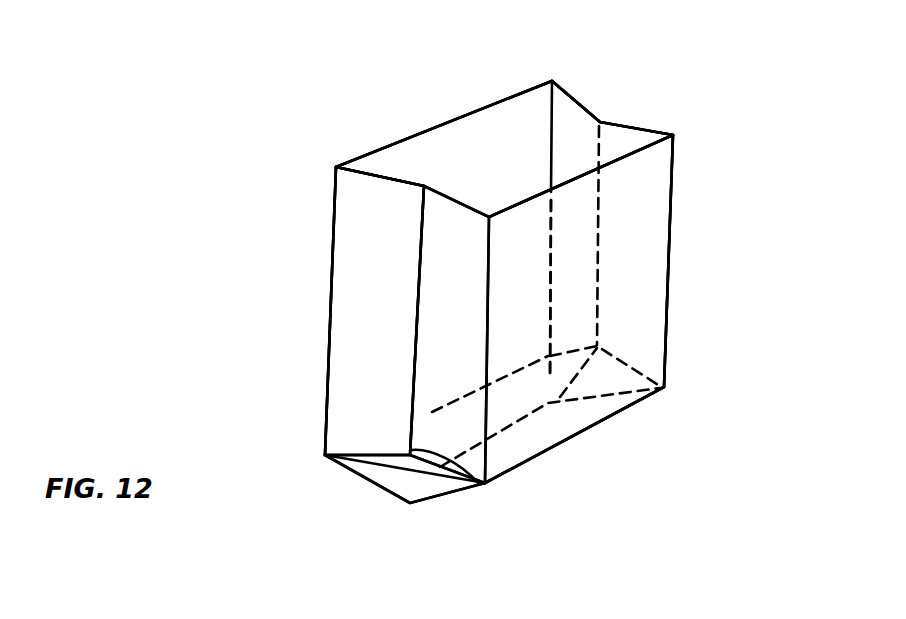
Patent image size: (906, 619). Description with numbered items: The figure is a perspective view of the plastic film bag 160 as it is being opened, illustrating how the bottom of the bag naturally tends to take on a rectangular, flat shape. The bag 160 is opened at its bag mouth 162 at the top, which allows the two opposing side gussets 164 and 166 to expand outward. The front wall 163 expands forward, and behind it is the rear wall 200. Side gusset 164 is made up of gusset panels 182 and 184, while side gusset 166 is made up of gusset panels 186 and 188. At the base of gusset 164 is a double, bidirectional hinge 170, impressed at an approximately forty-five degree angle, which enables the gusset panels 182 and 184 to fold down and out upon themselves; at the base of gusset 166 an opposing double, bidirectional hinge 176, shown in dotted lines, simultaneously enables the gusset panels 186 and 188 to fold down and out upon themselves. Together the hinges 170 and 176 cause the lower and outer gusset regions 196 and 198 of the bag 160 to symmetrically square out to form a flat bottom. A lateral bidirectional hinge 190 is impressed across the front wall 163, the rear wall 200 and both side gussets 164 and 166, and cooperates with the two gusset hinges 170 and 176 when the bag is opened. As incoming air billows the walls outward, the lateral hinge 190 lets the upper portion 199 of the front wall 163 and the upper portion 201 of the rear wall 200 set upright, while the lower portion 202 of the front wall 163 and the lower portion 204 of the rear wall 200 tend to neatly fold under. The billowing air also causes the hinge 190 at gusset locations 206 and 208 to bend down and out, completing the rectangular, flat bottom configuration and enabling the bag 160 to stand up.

The bag 160 is at (672, 176).
The bag mouth 162 is at (507, 128).
The front wall 163 is at (637, 240).
The side gusset 164 is at (378, 192).
The side gusset 166 is at (580, 112).
The double bidirectional hinge 170 is at (392, 462).
The double bidirectional hinge 176 is at (558, 386).
The gusset panel 182 is at (355, 262).
The gusset panel 184 is at (460, 265).
The gusset panel 186 is at (573, 158).
The gusset panel 188 is at (643, 177).
The lateral bidirectional hinge 190 is at (664, 366).
The lower outer gusset region 196 is at (388, 460).
The lower outer gusset region 198 is at (663, 365).
The upper portion of front wall 199 is at (627, 280).
The rear wall 200 is at (473, 140).
The upper portion of rear wall 201 is at (458, 160).
The lower portion of front wall 202 is at (518, 443).
The lower portion of rear wall 204 is at (452, 427).
The gusset location 206 is at (397, 428).
The gusset location 208 is at (572, 353).